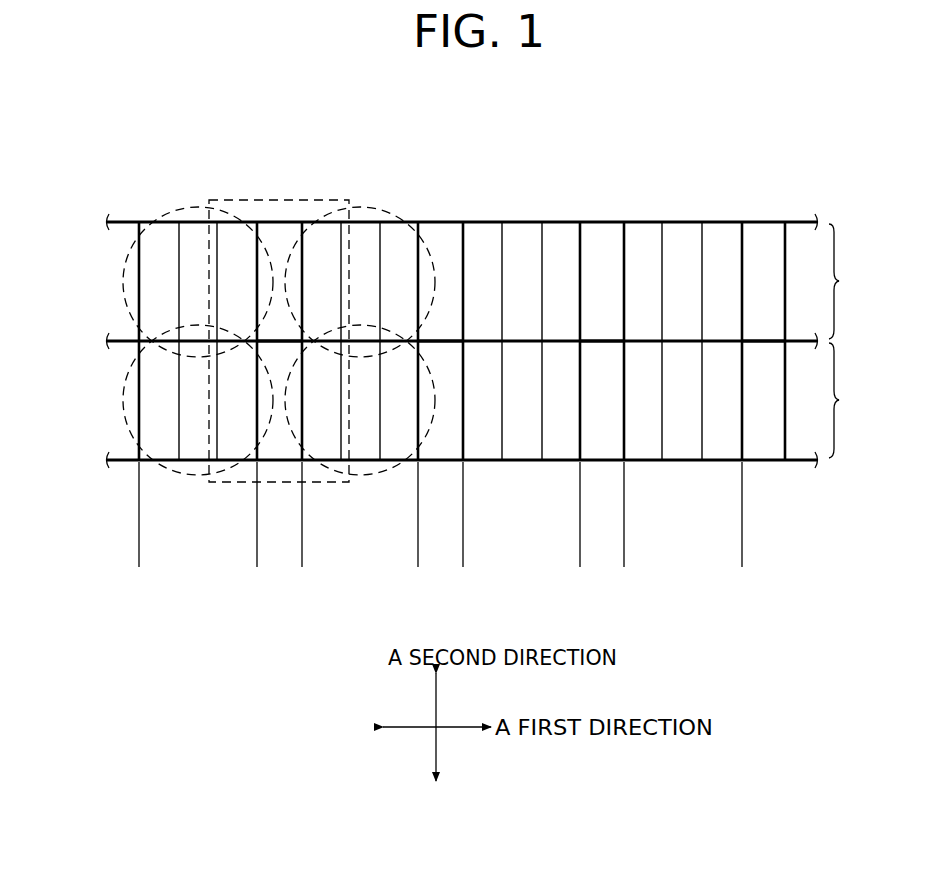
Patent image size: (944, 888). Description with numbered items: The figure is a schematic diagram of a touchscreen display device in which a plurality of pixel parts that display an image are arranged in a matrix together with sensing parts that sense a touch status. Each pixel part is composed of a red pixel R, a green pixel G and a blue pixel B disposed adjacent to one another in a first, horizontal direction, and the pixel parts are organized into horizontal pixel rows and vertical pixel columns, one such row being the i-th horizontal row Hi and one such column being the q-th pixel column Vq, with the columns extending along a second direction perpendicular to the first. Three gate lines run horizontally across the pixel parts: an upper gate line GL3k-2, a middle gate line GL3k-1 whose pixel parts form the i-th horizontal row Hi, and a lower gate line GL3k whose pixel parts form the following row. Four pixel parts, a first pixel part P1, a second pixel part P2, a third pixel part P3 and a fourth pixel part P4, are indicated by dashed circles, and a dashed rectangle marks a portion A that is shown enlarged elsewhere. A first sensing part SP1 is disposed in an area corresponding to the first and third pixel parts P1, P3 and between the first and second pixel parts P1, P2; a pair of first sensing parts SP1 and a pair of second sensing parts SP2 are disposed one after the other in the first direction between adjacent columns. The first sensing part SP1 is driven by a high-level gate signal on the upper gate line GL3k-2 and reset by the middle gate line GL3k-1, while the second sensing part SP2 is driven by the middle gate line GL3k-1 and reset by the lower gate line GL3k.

The (3k−2)-th gate line GL3k-2 is at (425, 223).
The (3k−1)-th gate line GL3k-1 is at (425, 342).
The (3k)-th gate line GL3k is at (433, 461).
The first pixel part P1 is at (173, 210).
The second pixel part P2 is at (387, 209).
The third pixel part P3 is at (199, 476).
The fourth pixel part P4 is at (358, 476).
The portion A is at (272, 200).
The first sensing part SP1 is at (360, 342).
The second sensing part SP2 is at (682, 342).
The i-th horizontal pixel row Hi is at (847, 281).
The q-th pixel column Vq is at (256, 558).
The red pixel R is at (401, 341).
The green pixel G is at (440, 341).
The blue pixel B is at (479, 341).